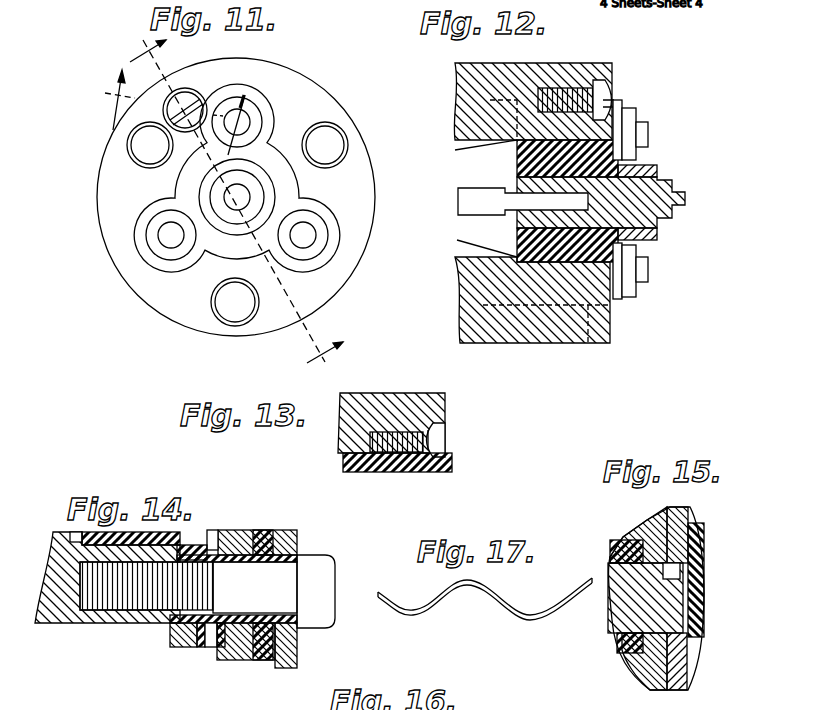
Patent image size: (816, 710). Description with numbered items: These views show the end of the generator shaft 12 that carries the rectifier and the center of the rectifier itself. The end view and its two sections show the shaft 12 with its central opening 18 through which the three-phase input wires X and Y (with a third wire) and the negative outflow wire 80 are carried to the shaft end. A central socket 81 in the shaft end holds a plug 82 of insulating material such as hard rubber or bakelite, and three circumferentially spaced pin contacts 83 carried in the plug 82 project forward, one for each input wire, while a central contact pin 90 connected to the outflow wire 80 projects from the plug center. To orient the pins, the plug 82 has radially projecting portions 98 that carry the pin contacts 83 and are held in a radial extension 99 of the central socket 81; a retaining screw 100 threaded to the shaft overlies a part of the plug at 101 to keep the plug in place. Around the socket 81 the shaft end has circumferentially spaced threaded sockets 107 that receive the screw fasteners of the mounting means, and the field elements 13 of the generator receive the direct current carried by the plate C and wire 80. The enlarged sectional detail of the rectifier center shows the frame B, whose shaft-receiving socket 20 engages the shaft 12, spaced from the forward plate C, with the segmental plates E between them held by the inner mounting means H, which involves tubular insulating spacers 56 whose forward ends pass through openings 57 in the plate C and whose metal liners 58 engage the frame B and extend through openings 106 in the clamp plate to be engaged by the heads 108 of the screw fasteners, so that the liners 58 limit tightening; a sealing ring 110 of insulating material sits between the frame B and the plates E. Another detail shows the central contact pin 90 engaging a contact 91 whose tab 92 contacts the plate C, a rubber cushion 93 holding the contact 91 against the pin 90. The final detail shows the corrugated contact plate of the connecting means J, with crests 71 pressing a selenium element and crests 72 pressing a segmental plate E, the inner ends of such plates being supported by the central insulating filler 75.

In FIG. 11, the shaft 12 is at (224, 210).
In FIG. 12, the shaft 12 is at (492, 323).
In FIG. 13, the shaft 12 is at (395, 393).
In FIG. 14, the shaft 12 is at (52, 622).
In FIG. 11, the field elements 13 is at (162, 116).
In FIG. 12, the central opening 18 is at (482, 148).
In FIG. 14, the central opening 18 is at (75, 538).
In FIG. 14, the shaft-receiving socket 20 is at (162, 620).
In FIG. 14, the spacers 56 is at (215, 623).
In FIG. 14, the openings 57 is at (262, 615).
In FIG. 14, the metal liners 58 is at (228, 625).
In FIG. 17, the crests 71 is at (410, 612).
In FIG. 17, the crests 72 is at (480, 582).
In FIG. 14, the central filler 75 is at (235, 658).
In FIG. 12, the outflow wire 80 is at (462, 203).
In FIG. 12, the central socket 81 is at (557, 262).
In FIG. 14, the central socket 81 is at (178, 545).
In FIG. 12, the plug 82 is at (520, 242).
In FIG. 13, the plug 82 is at (437, 473).
In FIG. 11, the pin contacts 83 is at (246, 125).
In FIG. 12, the pin contacts 83 is at (648, 134).
In FIG. 11, the central contact pin 90 is at (240, 196).
In FIG. 12, the central contact pin 90 is at (665, 203).
In FIG. 15, the central contact pin 90 is at (665, 598).
In FIG. 15, the contact 91 is at (675, 569).
In FIG. 14, the tab or contact plate 92 is at (78, 555).
In FIG. 15, the tab or contact plate 92 is at (667, 530).
In FIG. 14, the cushion 93 is at (262, 532).
In FIG. 15, the cushion 93 is at (700, 548).
In FIG. 12, the radially projecting portions 98 is at (618, 300).
In FIG. 13, the radially projecting portions 98 is at (345, 468).
In FIG. 11, the radial extension 99 is at (322, 208).
In FIG. 12, the radial extension 99 is at (588, 340).
In FIG. 13, the radial extension 99 is at (345, 458).
In FIG. 11, the retaining screw 100 is at (190, 93).
In FIG. 12, the retaining screw 100 is at (612, 82).
In FIG. 13, the retaining screw 100 is at (400, 440).
In FIG. 13, the part of the plug 101 is at (408, 473).
In FIG. 14, the openings 106 is at (285, 612).
In FIG. 11, the threaded sockets 107 is at (330, 141).
In FIG. 14, the threaded sockets 107 is at (108, 610).
In FIG. 14, the heads 108 is at (328, 562).
In FIG. 14, the sealing ring 110 is at (212, 648).
In FIG. 12, the input wire X is at (455, 152).
In FIG. 12, the input wire Y is at (463, 247).
In FIG. 14, the segmental plates E is at (214, 531).
In FIG. 14, the forward plate C is at (248, 532).
In FIG. 15, the forward plate C is at (680, 507).
In FIG. 14, the inner mounting means H is at (212, 572).
In FIG. 14, the frame B is at (185, 648).
In FIG. 17, the means electrically connecting J is at (516, 616).